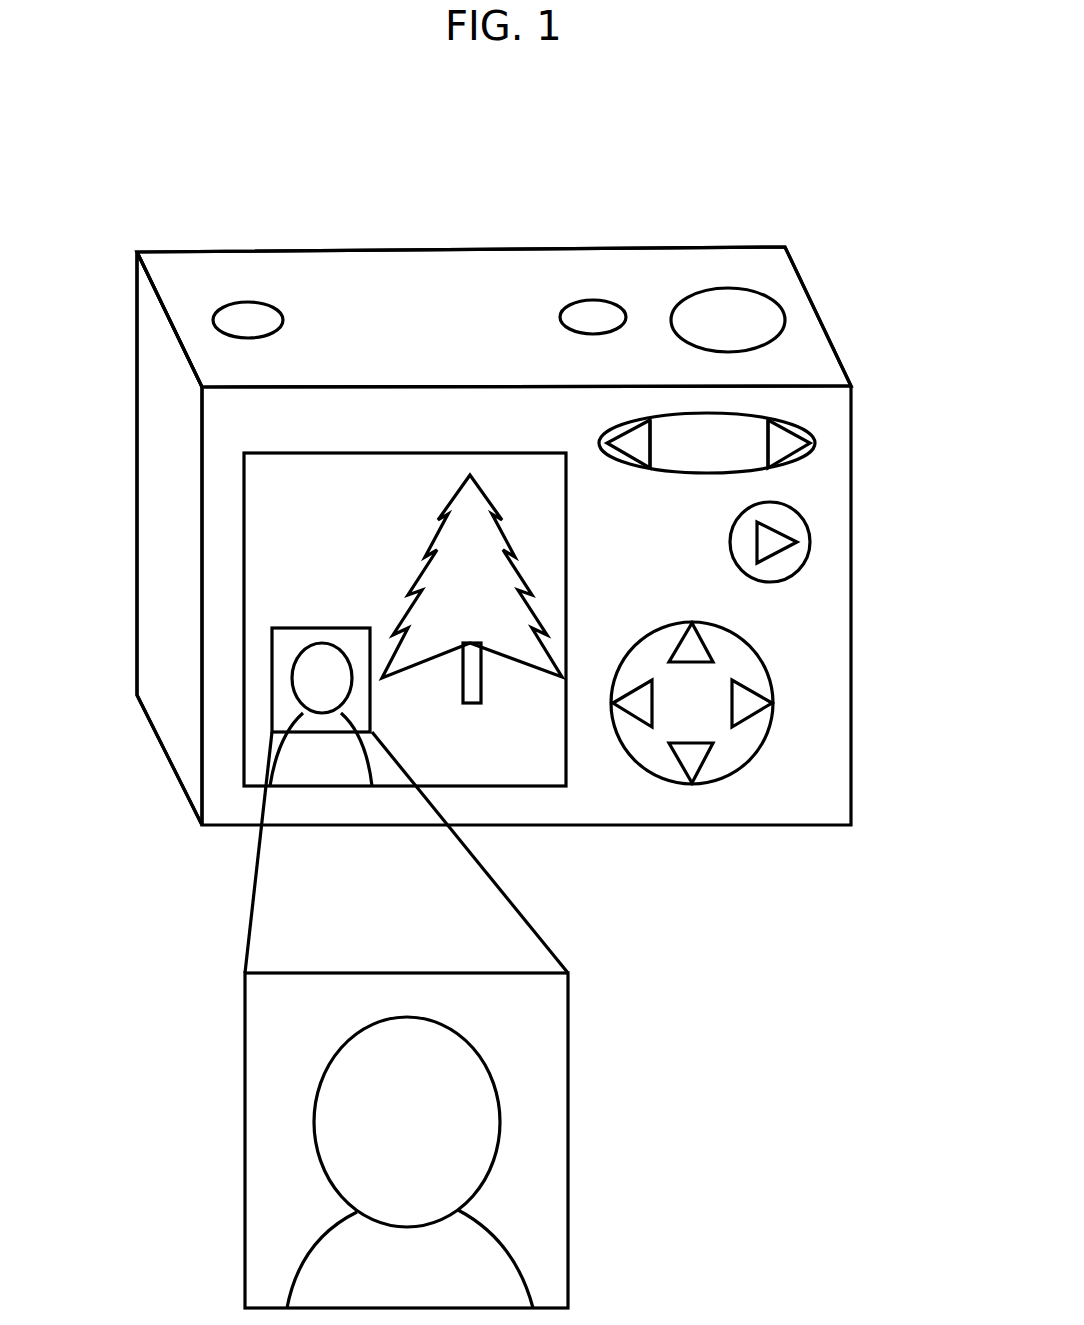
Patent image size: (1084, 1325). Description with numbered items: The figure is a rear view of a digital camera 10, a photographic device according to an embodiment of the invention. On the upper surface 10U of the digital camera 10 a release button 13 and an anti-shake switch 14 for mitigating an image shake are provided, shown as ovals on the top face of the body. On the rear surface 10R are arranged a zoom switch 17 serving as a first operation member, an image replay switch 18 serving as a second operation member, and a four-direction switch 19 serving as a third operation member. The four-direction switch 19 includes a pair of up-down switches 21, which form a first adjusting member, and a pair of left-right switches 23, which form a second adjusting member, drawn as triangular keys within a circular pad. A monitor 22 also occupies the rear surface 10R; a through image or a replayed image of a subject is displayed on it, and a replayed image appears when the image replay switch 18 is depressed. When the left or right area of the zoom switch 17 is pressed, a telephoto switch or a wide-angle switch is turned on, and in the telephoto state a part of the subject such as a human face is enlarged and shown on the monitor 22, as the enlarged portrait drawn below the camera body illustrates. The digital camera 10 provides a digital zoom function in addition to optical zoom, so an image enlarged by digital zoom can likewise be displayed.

The digital camera 10 is at (828, 204).
The upper surface 10U is at (410, 290).
The rear surface 10R is at (253, 420).
The release button 13 is at (728, 287).
The anti-shake switch 14 is at (593, 298).
The zoom switch 17 is at (805, 421).
The image replay switch 18 is at (810, 542).
The four-direction switch 19 is at (808, 702).
The up-down switches 21 is at (693, 664).
The monitor 22 is at (513, 787).
The left-right switches 23 is at (740, 690).